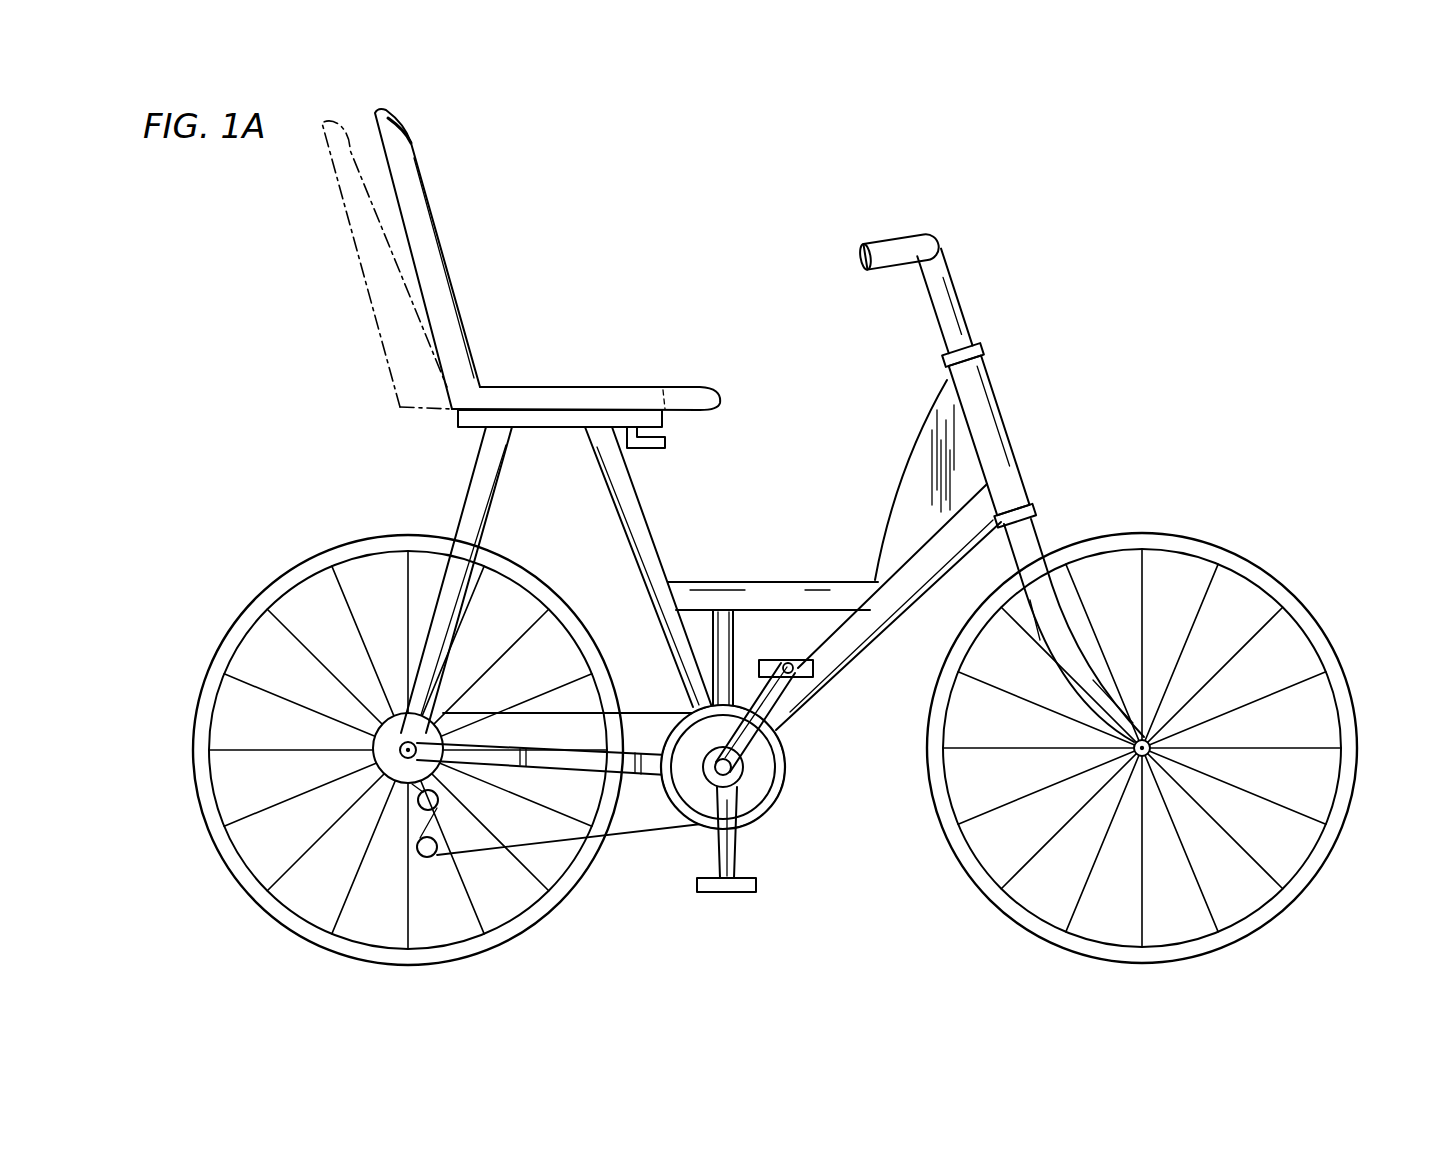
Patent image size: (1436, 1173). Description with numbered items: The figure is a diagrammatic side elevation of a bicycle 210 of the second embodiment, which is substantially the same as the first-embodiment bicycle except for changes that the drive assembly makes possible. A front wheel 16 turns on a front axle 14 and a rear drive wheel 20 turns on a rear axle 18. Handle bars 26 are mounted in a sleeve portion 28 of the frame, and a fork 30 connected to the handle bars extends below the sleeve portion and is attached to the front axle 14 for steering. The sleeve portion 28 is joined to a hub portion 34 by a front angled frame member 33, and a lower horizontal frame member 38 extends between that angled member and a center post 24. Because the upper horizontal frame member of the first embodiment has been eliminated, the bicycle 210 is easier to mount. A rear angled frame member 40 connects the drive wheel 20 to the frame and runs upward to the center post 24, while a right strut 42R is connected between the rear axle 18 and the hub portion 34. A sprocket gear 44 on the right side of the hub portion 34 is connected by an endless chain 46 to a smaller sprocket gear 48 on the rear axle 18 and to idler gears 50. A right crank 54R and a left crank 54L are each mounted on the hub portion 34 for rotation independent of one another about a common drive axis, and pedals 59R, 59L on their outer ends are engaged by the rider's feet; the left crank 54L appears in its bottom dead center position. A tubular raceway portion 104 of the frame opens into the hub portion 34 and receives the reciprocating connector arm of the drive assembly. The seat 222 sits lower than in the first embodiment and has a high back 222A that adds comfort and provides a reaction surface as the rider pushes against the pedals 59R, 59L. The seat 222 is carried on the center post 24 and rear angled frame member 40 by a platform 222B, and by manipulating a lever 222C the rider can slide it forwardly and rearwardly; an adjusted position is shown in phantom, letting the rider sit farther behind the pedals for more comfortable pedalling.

The bicycle 210 is at (1097, 281).
The seat 222 is at (362, 277).
The high back 222A is at (432, 210).
The platform 222B is at (533, 420).
The lever 222C is at (650, 452).
The handle bars 26 is at (900, 245).
The sleeve portion 28 is at (980, 420).
The fork 30 is at (1037, 533).
The front wheel 16 is at (1205, 535).
The front axle 14 is at (1160, 752).
The front angled frame member 33 is at (893, 594).
The lower horizontal frame member 38 is at (773, 574).
The tubular raceway portion 104 is at (735, 632).
The center post 24 is at (656, 572).
The rear angled frame member 40 is at (470, 487).
The rear drive wheel 20 is at (300, 562).
The smaller sprocket gear 48 is at (387, 730).
The rear axle 18 is at (400, 752).
The right strut 42R is at (553, 760).
The idler gears 50 is at (417, 847).
The endless chain 46 is at (498, 843).
The right pedal 59R is at (790, 678).
The right crank 54R is at (782, 717).
The hub portion 34 is at (786, 799).
The sprocket gear 44 is at (763, 816).
The left crank 54L is at (720, 855).
The left pedal 59L is at (697, 886).